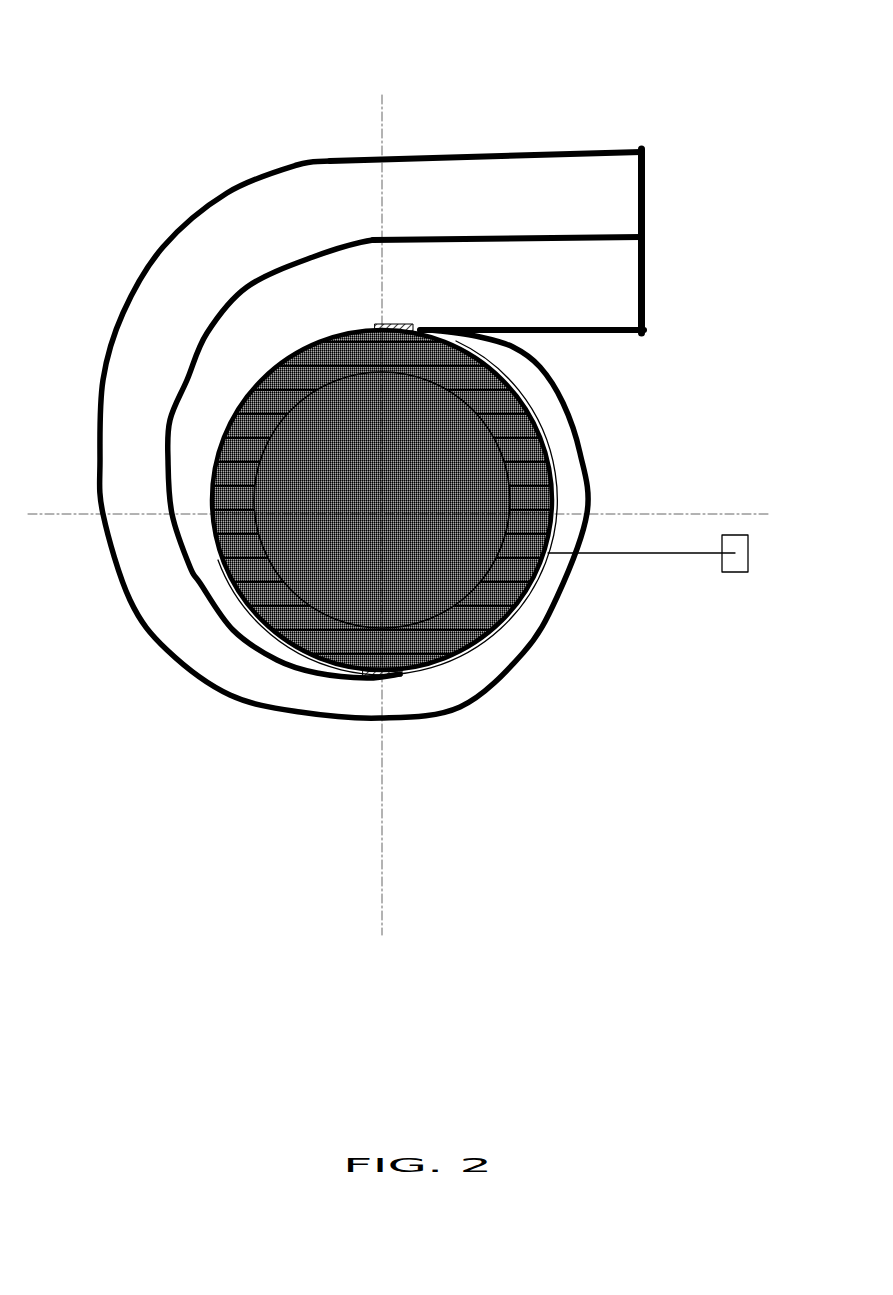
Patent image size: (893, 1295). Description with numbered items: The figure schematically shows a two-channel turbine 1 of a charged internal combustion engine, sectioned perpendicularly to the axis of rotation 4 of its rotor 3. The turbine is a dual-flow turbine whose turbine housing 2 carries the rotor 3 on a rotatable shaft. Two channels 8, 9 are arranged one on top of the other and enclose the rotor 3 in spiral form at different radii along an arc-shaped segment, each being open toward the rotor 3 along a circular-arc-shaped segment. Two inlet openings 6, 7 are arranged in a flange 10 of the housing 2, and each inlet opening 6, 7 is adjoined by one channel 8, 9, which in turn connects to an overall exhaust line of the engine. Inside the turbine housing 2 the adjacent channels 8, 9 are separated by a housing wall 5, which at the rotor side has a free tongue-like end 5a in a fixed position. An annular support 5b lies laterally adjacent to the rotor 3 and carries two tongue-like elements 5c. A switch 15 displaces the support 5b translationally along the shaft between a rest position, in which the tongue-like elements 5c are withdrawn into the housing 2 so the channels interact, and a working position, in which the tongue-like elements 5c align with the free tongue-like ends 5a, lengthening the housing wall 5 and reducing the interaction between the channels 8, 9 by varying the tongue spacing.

The two-channel turbine 1 is at (146, 67).
The turbine housing 2 is at (162, 250).
The rotor 3 is at (324, 508).
The axis of rotation 4 is at (382, 513).
The housing wall 5 is at (557, 333).
The free tongue-like end 5a is at (432, 329).
The annular support 5b is at (507, 588).
The tongue-like element 5c is at (403, 324).
The inlet opening 6 is at (647, 292).
The inlet opening 7 is at (645, 192).
The channel 8 is at (572, 311).
The channel 9 is at (572, 204).
The flange 10 is at (645, 151).
The switch 15 is at (733, 573).